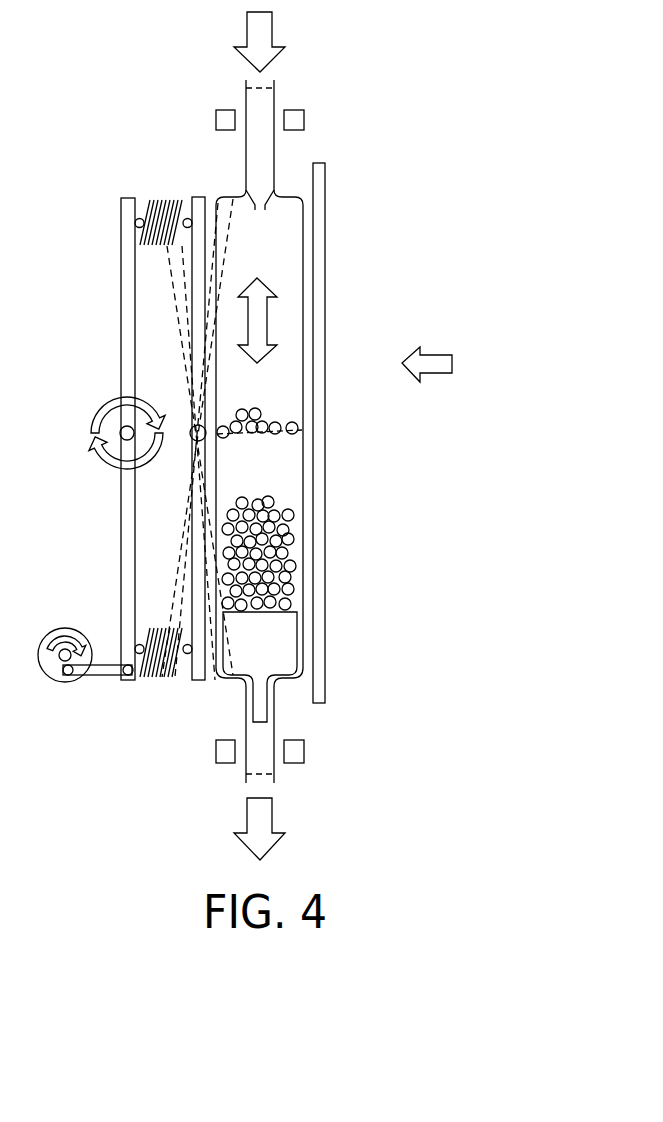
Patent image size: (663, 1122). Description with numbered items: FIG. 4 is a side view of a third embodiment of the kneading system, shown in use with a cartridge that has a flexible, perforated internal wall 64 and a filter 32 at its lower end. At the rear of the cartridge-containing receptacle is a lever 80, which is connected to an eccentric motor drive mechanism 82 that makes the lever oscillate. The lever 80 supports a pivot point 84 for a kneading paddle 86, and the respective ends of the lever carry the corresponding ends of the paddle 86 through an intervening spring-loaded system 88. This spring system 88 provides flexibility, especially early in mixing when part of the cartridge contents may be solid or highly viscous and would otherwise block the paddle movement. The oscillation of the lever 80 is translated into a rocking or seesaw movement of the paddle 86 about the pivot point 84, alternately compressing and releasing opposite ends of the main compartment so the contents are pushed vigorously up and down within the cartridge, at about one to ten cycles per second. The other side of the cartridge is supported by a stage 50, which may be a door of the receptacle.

The filter 32 is at (288, 645).
The stage 50 is at (322, 263).
The flexible, perforated internal wall 64 is at (297, 428).
The lever 80 is at (121, 300).
The eccentric motor drive mechanism 82 is at (52, 668).
The pivot point 84 is at (197, 438).
The kneading paddle 86 is at (128, 578).
The spring-loaded system 88 is at (138, 220).